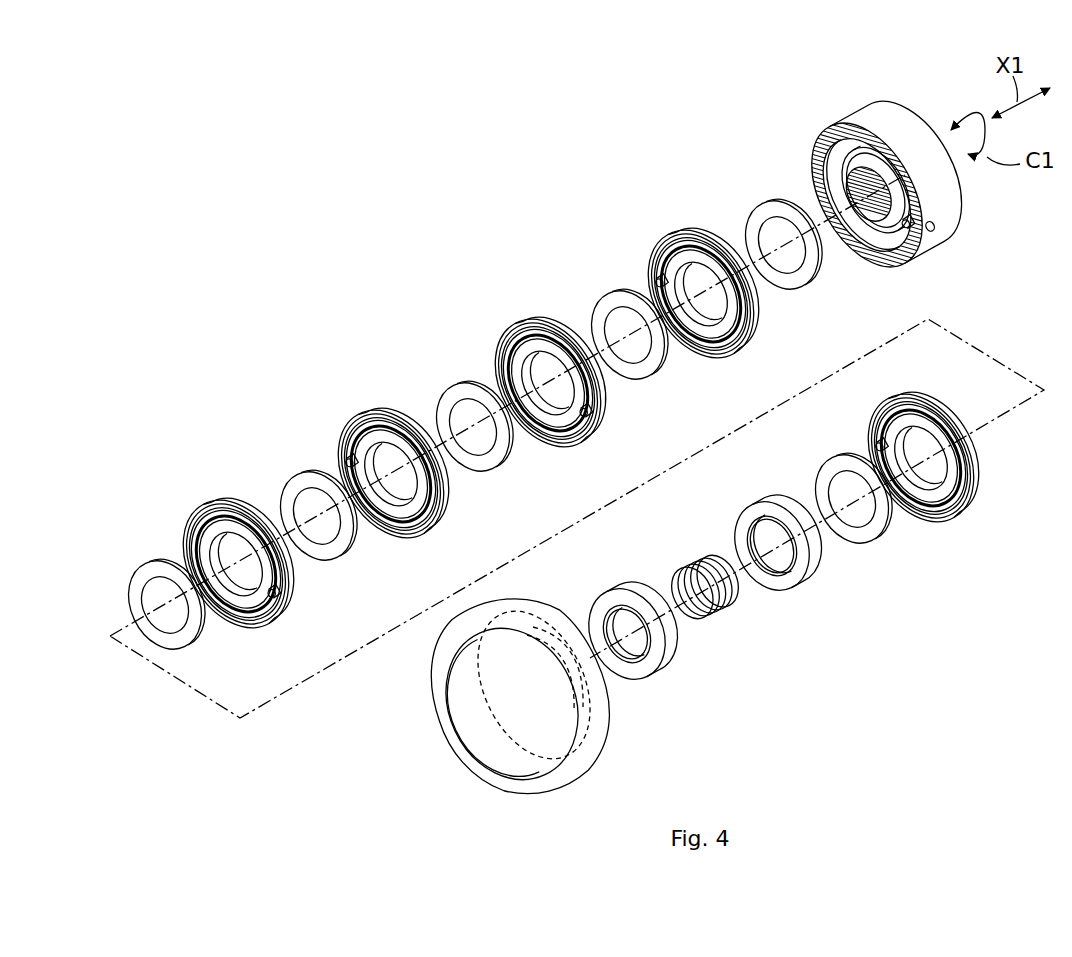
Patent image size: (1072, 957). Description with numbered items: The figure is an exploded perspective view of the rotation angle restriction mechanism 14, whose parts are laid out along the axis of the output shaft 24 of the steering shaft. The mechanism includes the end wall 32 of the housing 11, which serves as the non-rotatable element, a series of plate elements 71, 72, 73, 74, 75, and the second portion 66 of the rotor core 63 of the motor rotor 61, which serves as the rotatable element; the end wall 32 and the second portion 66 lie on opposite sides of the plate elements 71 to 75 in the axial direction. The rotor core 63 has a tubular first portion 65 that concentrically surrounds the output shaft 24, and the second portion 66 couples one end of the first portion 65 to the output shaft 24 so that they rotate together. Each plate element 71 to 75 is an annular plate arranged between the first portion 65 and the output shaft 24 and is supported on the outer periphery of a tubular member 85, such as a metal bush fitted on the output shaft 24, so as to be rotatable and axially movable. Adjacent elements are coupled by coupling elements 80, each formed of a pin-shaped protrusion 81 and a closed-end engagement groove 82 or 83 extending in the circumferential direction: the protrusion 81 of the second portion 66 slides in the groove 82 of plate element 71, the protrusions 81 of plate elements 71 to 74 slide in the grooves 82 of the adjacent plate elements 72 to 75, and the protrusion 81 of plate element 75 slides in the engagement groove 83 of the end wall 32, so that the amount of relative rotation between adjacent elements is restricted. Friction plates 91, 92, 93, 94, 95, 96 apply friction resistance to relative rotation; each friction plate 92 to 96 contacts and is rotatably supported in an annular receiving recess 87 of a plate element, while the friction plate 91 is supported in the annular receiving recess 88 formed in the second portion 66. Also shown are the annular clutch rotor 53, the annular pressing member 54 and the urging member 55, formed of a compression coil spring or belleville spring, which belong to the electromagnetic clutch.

The housing 11 is at (517, 696).
The rotation angle restriction mechanism 14 is at (624, 200).
The output shaft 24 is at (848, 192).
The end wall 32 is at (495, 748).
The clutch rotor 53 is at (630, 582).
The pressing member 54 is at (772, 498).
The urging member 55 is at (698, 556).
The motor rotor 61 is at (849, 202).
The rotor core 63 is at (864, 118).
The first portion 65 is at (902, 118).
The second portion 66 is at (838, 150).
The plate element 71 is at (694, 236).
The plate element 72 is at (594, 422).
The plate element 73 is at (385, 406).
The plate element 74 is at (284, 610).
The plate element 75 is at (970, 495).
The coupling element 80 is at (578, 456).
The protrusion 81 is at (368, 432).
The engagement groove 82 is at (198, 508).
The engagement groove 83 is at (598, 692).
The tubular member 85 is at (895, 193).
The receiving recess 87 is at (250, 610).
The receiving recess 88 is at (913, 232).
The friction plate 91 is at (758, 204).
The friction plate 92 is at (642, 368).
The friction plate 93 is at (456, 393).
The friction plate 94 is at (336, 552).
The friction plate 95 is at (128, 570).
The friction plate 96 is at (832, 460).